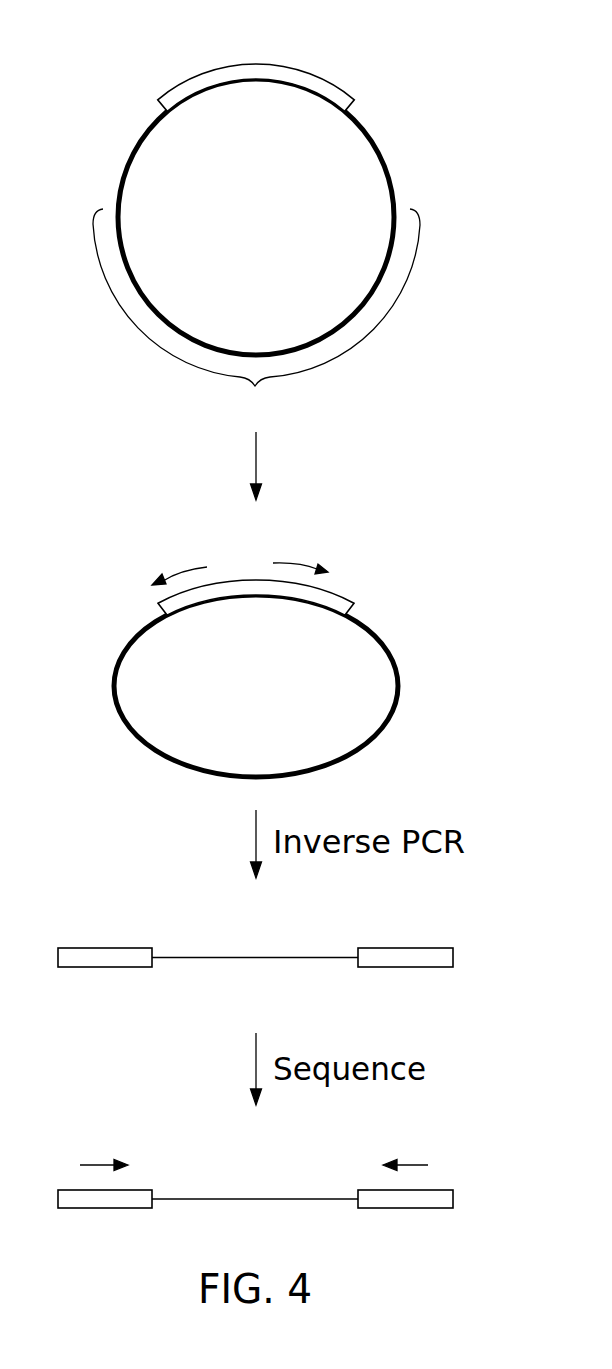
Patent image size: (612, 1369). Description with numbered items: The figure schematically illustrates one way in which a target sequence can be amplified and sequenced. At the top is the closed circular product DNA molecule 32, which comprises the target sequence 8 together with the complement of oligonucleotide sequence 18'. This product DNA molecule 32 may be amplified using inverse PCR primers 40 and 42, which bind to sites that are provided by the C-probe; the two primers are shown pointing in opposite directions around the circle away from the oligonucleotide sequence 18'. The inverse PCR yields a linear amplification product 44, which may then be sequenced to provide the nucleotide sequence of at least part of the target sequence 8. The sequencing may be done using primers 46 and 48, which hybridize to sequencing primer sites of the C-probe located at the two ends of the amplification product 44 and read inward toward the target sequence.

The complement of oligonucleotide sequence 18' is at (256, 56).
The product DNA molecule 32 is at (286, 178).
The target sequence 8 is at (256, 313).
The inverse PCR primer 40 is at (187, 567).
The inverse PCR primer 42 is at (298, 565).
The amplification product 44 is at (384, 910).
The sequencing primer 46 is at (107, 1163).
The sequencing primer 48 is at (415, 1163).